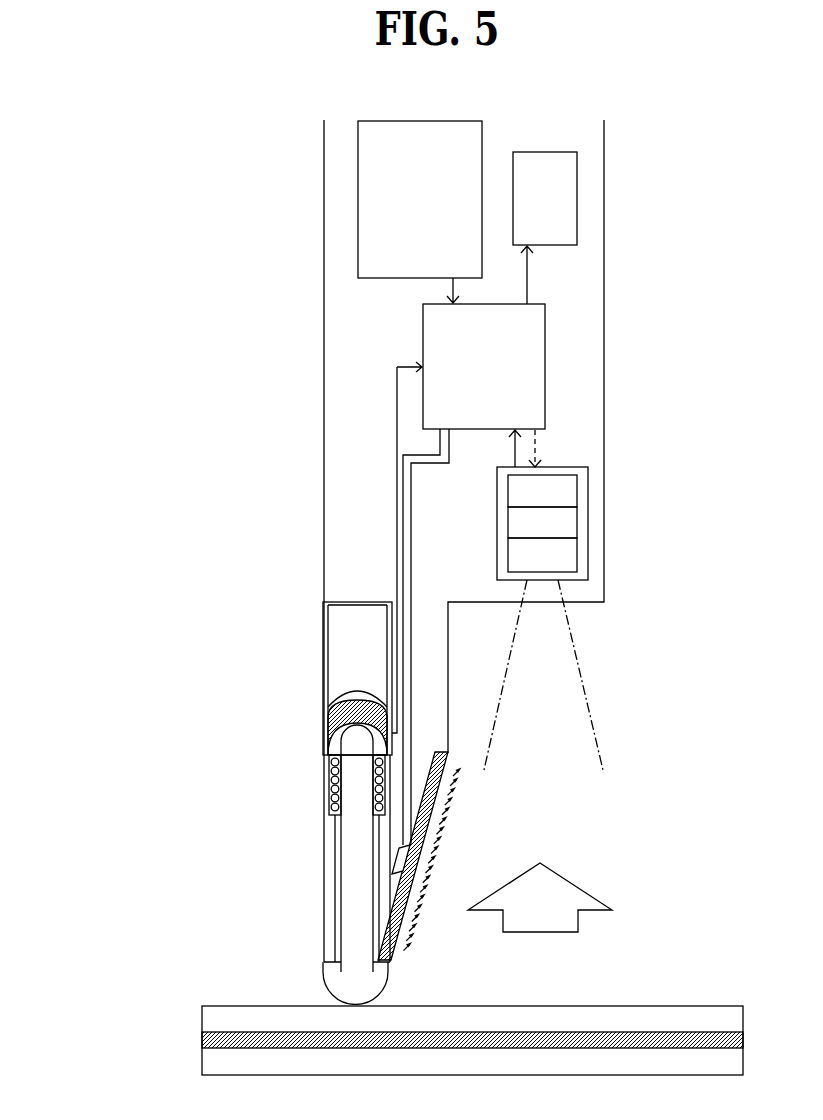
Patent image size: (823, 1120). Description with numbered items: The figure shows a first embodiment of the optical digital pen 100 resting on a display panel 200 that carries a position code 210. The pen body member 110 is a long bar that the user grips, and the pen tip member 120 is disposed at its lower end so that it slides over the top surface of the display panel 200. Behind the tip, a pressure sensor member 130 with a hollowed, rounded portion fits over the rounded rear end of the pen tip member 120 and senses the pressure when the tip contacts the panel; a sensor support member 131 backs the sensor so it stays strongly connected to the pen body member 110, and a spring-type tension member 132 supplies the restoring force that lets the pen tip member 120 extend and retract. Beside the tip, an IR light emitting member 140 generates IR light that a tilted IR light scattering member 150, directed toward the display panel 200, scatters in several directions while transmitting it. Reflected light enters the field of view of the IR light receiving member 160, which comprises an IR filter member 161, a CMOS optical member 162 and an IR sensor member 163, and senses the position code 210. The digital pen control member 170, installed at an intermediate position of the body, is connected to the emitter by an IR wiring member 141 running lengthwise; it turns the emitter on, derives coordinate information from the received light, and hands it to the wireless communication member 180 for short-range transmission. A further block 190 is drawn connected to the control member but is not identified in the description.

The optical digital pen 100 is at (316, 186).
The pen body member 110 is at (325, 333).
The pen tip member 120 is at (330, 978).
The pressure sensor member 130 is at (325, 714).
The sensor support member 131 is at (357, 678).
The tension member 132 is at (330, 783).
The IR light emitting member 140 is at (398, 862).
The IR wiring member 141 is at (403, 515).
The IR light scattering member 150 is at (394, 902).
The IR light receiving member 160 is at (588, 518).
The IR filter member 161 is at (542, 491).
The CMOS optical member 162 is at (542, 522).
The IR sensor member 163 is at (542, 555).
The digital pen control member 170 is at (484, 356).
The wireless communication member 180 is at (545, 198).
The power supply 190 is at (420, 199).
The display panel 200 is at (196, 999).
The position code 210 is at (202, 1040).